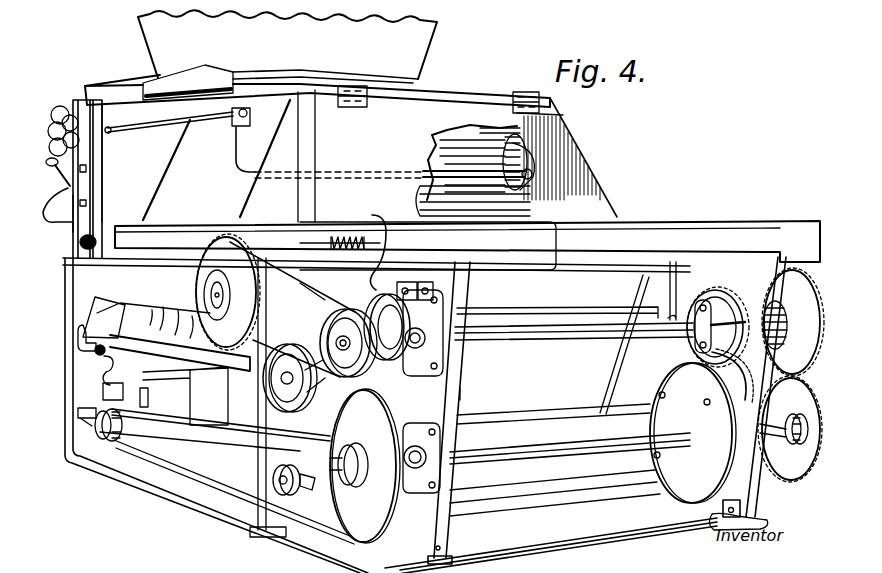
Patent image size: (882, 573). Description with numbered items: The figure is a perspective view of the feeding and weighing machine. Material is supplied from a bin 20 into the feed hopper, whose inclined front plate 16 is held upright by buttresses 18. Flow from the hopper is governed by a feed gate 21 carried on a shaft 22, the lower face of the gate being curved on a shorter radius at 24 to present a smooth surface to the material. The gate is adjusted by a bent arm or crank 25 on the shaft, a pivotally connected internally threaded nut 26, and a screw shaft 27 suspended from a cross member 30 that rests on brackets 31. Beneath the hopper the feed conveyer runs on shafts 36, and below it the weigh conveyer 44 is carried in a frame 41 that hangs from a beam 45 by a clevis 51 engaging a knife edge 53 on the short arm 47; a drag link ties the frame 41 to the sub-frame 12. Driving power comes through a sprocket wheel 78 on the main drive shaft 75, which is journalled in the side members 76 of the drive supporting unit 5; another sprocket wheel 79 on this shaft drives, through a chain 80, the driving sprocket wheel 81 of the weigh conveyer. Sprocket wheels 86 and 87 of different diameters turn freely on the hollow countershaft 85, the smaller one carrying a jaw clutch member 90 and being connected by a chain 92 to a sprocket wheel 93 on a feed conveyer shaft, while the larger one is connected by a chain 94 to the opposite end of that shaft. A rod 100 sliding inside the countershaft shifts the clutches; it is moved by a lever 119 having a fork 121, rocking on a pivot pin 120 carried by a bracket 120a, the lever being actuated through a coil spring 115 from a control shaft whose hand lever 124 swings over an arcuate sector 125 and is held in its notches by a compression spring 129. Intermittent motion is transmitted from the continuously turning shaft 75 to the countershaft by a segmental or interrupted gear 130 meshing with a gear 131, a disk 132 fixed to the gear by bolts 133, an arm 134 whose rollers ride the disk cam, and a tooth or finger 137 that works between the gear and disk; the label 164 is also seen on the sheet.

The drive supporting unit 5 is at (460, 395).
The sub-frame 12 is at (203, 515).
The inclined front plate 16 is at (500, 128).
The buttresses 18 is at (247, 208).
The bin 20 is at (287, 55).
The feed gate 21 is at (450, 148).
The shaft 22 is at (453, 172).
The curved lower portion of gate face 24 is at (507, 207).
The bent arm or crank 25 is at (233, 165).
The internally threaded nut 26 is at (249, 118).
The screw shaft 27 is at (112, 133).
The cross member 30 is at (117, 90).
The brackets 31 is at (100, 168).
The shafts 36 is at (205, 287).
The frame 41 is at (218, 448).
The endless conveyer 44 is at (548, 420).
The beam 45 is at (127, 360).
The short arm 47 is at (95, 350).
The clevis 51 is at (113, 364).
The knife edge 53 is at (98, 356).
The main drive shaft 75 is at (568, 453).
The side members 76 is at (438, 394).
The sprocket wheel 78 is at (793, 457).
The sprocket wheel 79 is at (367, 527).
The chain 80 is at (132, 458).
The driving sprocket wheel 81 is at (82, 470).
The countershaft 85 is at (560, 340).
The sprocket wheel 86 is at (347, 308).
The sprocket wheel 87 is at (787, 335).
The jaw clutch member 90 is at (390, 360).
The chain 92 is at (318, 290).
The sprocket wheel 93 is at (217, 270).
The chain 94 is at (780, 284).
The rod 100 is at (197, 242).
The coil spring 115 is at (347, 240).
The lever 119 is at (393, 230).
The pivot pin 120 is at (407, 287).
The bracket 120a is at (440, 282).
The fork 121 is at (427, 308).
The lever 124 is at (62, 182).
The arcuate sector 125 is at (47, 228).
The coiled compression spring 129 is at (97, 240).
The segmental or interrupted gear 130 is at (733, 380).
The gear 131 is at (713, 293).
The disk 132 is at (690, 490).
The bolts 133 is at (705, 404).
The arm 134 is at (703, 343).
The tooth or finger 137 is at (743, 322).
The reference 164 is at (644, 8).